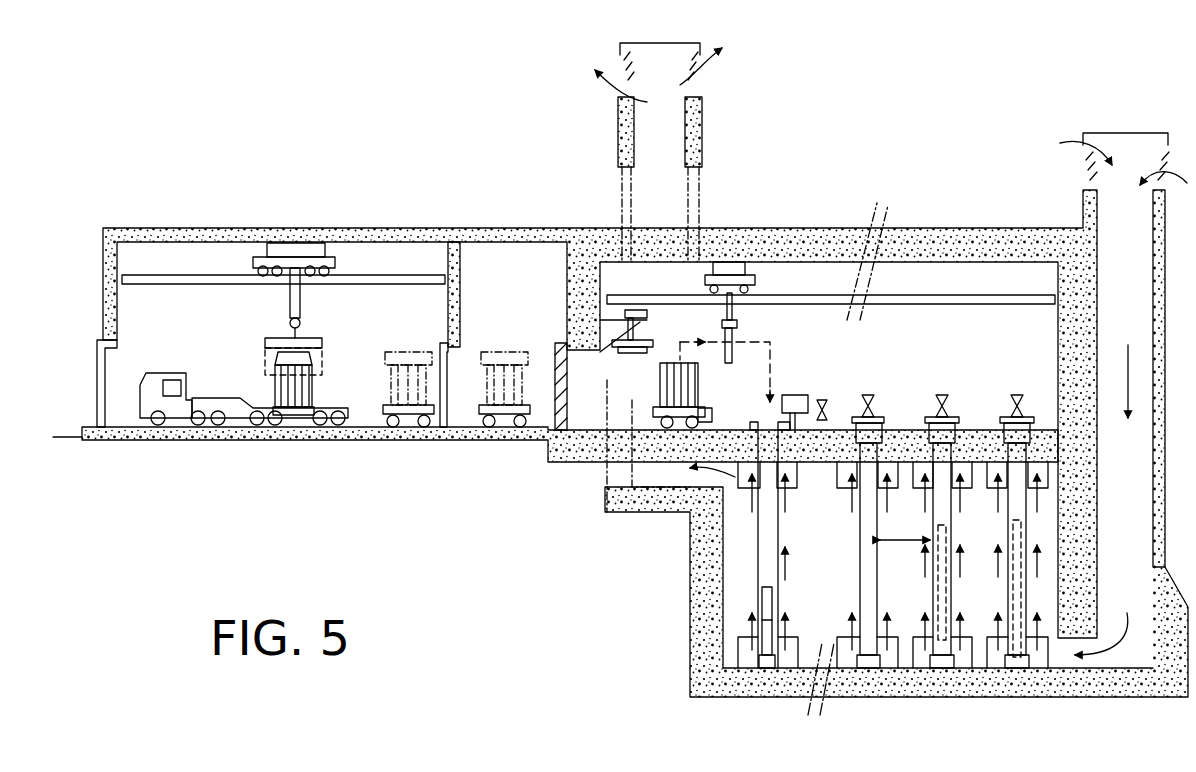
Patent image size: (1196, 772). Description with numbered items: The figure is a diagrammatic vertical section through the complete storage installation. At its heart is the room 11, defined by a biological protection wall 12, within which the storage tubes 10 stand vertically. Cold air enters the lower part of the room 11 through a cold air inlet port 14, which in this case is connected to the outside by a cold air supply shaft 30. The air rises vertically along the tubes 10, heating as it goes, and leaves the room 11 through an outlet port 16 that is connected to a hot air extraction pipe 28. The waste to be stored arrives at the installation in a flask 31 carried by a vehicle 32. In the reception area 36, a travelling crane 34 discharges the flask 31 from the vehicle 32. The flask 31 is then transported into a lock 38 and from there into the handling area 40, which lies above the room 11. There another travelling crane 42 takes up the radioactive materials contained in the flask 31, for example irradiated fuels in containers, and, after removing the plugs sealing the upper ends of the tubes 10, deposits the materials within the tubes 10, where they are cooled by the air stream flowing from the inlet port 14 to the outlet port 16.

The storage tubes 10 is at (868, 553).
The room 11 is at (740, 540).
The biological protection wall 12 is at (712, 635).
The cold air inlet port 14 is at (1106, 621).
The outlet port 16 is at (682, 478).
The hot air extraction pipe 28 is at (660, 208).
The cold air supply shaft 30 is at (1113, 475).
The flask 31 is at (307, 385).
The vehicle 32 is at (180, 415).
The travelling crane 34 is at (268, 258).
The reception area 36 is at (374, 302).
The lock 38 is at (505, 258).
The handling area 40 is at (925, 318).
The travelling crane 42 is at (745, 272).